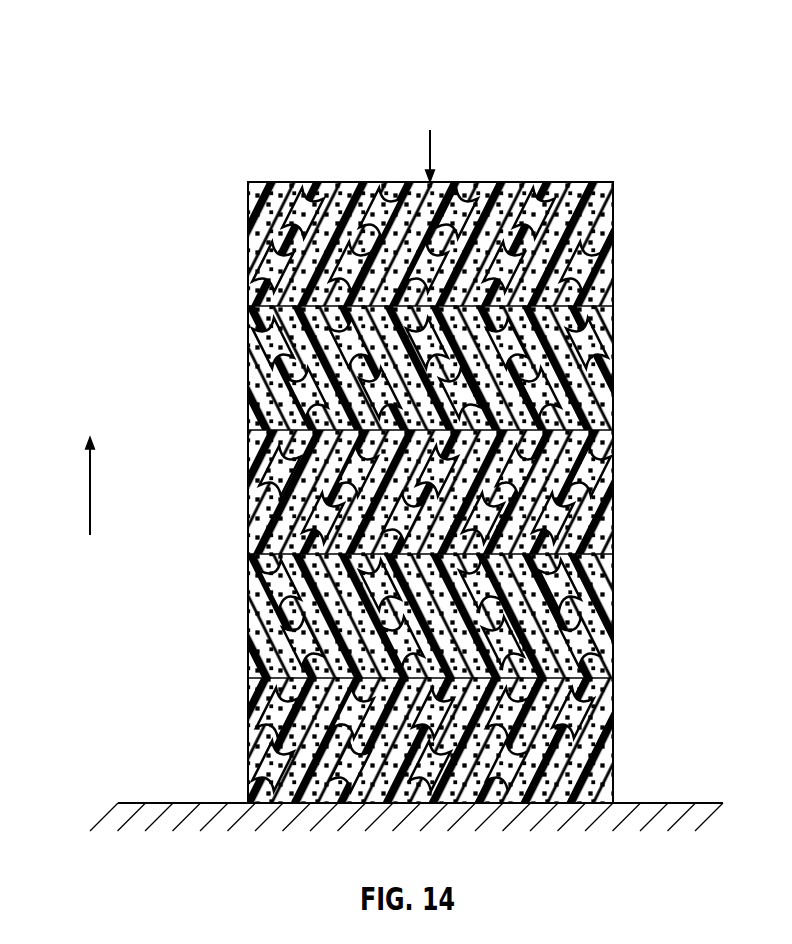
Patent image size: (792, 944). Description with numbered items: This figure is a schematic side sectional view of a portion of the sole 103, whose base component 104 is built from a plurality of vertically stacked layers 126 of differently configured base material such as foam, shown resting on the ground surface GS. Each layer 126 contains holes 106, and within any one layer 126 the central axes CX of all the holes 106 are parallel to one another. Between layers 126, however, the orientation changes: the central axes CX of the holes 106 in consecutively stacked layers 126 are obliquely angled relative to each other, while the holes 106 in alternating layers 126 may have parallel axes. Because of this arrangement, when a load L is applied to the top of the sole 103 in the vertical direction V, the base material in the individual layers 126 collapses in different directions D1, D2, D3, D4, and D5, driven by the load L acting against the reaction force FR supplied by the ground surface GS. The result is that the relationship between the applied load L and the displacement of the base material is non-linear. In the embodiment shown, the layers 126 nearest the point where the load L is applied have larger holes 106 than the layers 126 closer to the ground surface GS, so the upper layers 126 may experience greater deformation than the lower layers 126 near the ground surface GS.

The sole 103 is at (518, 182).
The base component 104 is at (600, 182).
The holes 106 is at (262, 265).
The vertically stacked layers 126 is at (613, 252).
The central axes of the holes CX is at (463, 179).
The load L is at (430, 150).
The vertical direction V is at (90, 488).
The ground surface GS is at (151, 795).
The reaction force FR is at (418, 813).
The collapse direction D1 is at (649, 232).
The collapse direction D2 is at (661, 388).
The collapse direction D3 is at (648, 480).
The fiber direction 4 D4 is at (661, 628).
The collapse direction D5 is at (648, 730).